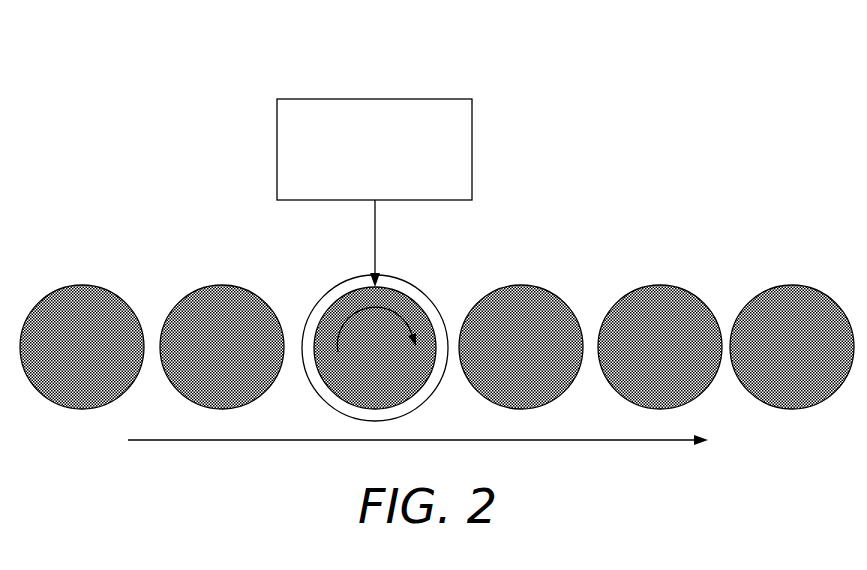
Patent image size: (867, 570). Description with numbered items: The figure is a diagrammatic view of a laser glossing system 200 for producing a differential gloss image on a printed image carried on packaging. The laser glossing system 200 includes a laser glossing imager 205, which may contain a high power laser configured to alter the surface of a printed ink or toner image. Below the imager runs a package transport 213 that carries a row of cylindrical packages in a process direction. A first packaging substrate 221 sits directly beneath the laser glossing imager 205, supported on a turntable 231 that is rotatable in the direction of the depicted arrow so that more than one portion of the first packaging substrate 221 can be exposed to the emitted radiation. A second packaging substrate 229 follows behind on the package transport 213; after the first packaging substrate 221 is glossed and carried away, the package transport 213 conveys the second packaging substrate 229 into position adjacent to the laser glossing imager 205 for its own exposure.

The laser glossing system 200 is at (248, 51).
The laser glossing imager 205 is at (423, 99).
The second packaging substrate 229 is at (203, 287).
The first packaging substrate 221 is at (349, 307).
The turntable 231 is at (427, 292).
The package transport 213 is at (583, 442).